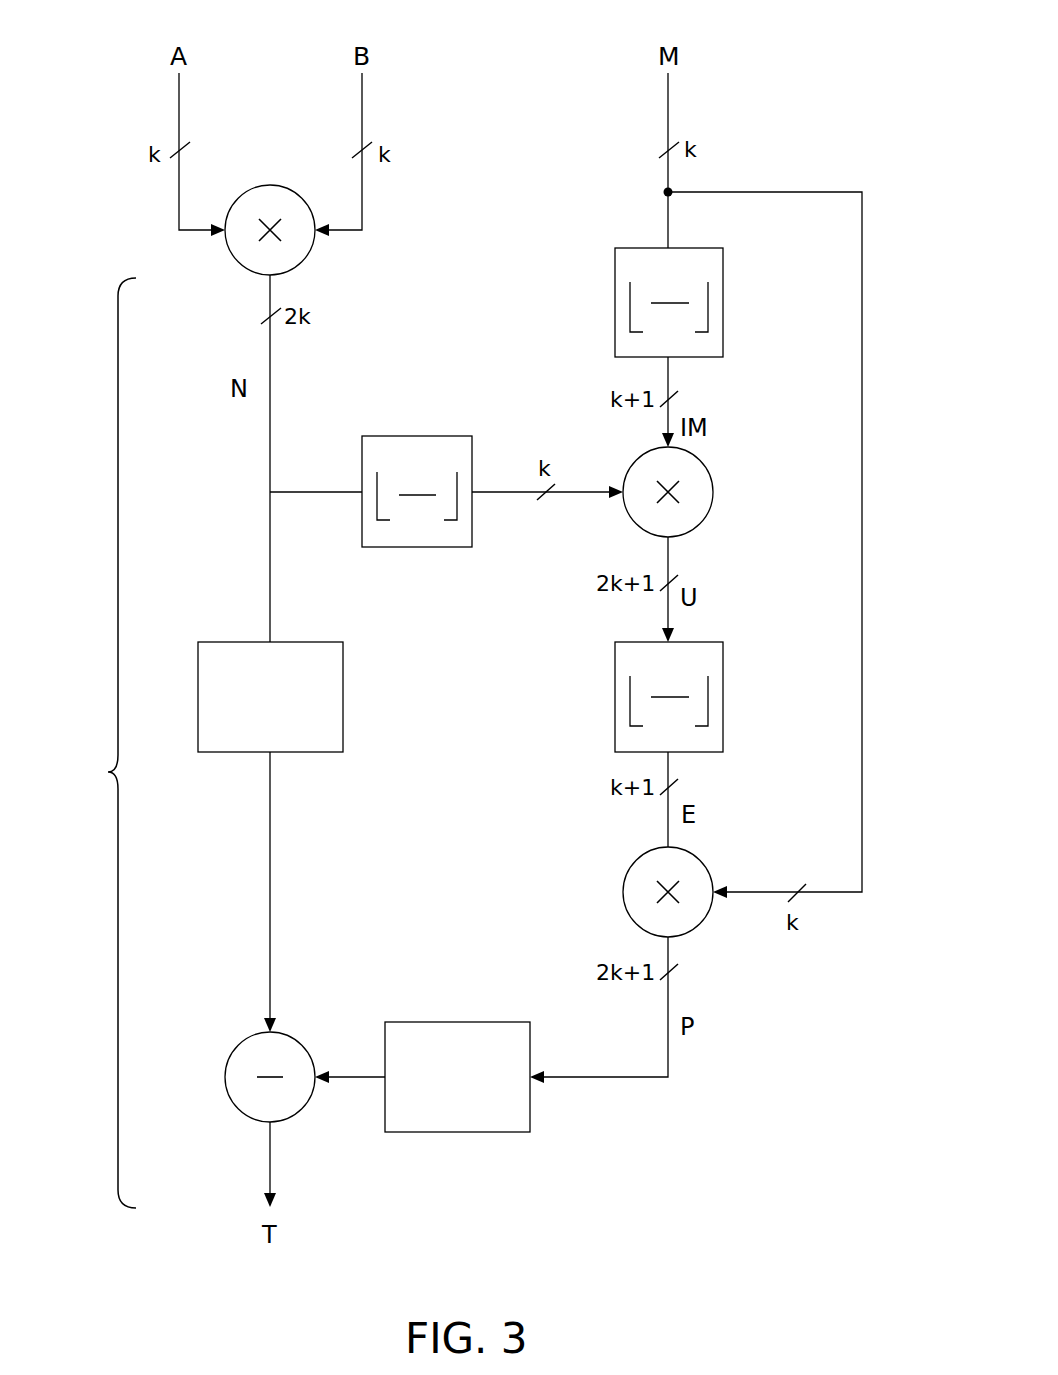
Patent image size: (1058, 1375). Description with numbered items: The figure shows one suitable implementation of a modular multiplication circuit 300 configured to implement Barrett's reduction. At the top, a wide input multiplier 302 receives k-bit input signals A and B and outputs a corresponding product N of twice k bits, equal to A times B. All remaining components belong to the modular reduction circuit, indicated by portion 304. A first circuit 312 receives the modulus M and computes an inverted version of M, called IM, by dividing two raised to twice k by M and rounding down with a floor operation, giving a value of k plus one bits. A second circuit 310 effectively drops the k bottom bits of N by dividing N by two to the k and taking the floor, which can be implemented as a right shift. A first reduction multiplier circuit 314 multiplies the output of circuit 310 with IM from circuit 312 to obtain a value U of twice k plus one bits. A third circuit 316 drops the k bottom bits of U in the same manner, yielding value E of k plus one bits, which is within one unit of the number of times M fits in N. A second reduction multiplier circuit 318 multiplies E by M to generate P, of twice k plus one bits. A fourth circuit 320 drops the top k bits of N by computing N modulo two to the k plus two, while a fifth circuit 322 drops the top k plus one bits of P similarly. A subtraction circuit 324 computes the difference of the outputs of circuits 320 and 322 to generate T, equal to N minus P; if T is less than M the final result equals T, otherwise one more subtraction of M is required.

The modular multiplication circuit 300 is at (832, 48).
The wide input multiplier 302 is at (272, 185).
The modular reduction circuit portion 304 is at (94, 743).
The second circuit 310 is at (416, 436).
The first circuit 312 is at (615, 300).
The first reduction multiplier circuit 314 is at (712, 478).
The third circuit 316 is at (723, 699).
The second reduction multiplier circuit 318 is at (708, 870).
The fourth circuit 320 is at (343, 698).
The fifth circuit 322 is at (455, 1022).
The subtraction circuit 324 is at (225, 1077).